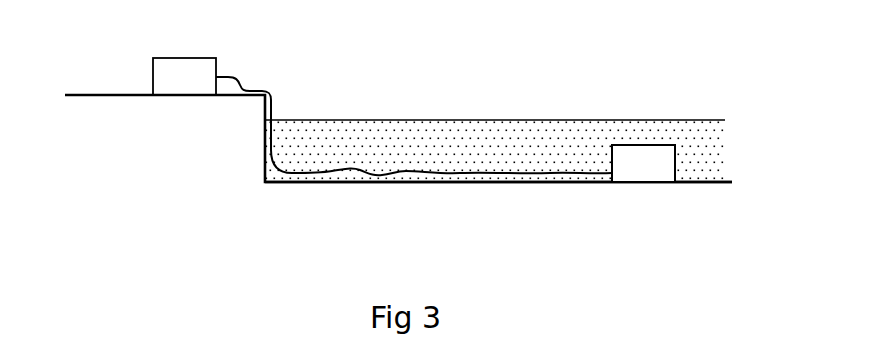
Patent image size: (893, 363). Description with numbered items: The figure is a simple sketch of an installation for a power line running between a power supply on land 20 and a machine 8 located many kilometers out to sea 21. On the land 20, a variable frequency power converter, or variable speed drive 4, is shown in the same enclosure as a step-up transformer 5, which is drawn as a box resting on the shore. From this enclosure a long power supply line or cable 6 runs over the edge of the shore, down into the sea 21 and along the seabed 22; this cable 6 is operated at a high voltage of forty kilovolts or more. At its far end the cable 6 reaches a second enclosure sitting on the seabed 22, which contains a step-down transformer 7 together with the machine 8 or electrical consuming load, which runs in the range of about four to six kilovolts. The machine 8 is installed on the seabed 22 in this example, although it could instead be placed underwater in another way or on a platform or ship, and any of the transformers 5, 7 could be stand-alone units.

The variable frequency power converter 4 is at (190, 61).
The step-up transformer 5 is at (190, 61).
The power supply line 6 is at (425, 163).
The step-down transformer 7 is at (627, 142).
The machine 8 is at (652, 124).
The land 20 is at (398, 138).
The sea 21 is at (517, 142).
The seabed 22 is at (517, 180).